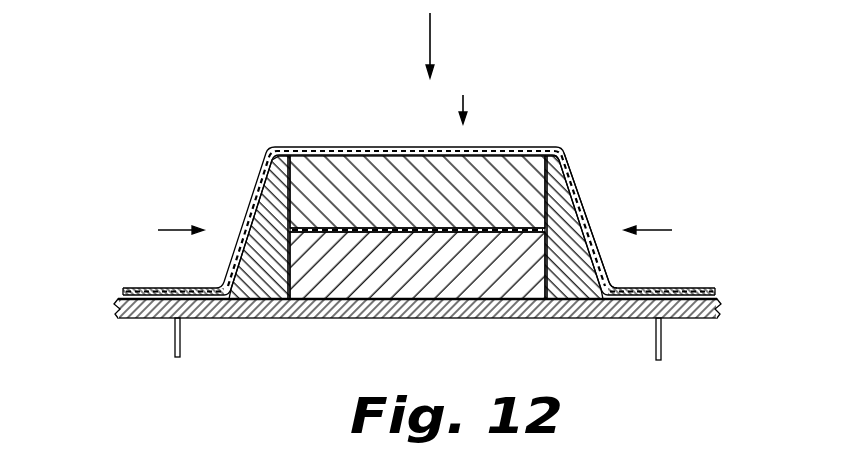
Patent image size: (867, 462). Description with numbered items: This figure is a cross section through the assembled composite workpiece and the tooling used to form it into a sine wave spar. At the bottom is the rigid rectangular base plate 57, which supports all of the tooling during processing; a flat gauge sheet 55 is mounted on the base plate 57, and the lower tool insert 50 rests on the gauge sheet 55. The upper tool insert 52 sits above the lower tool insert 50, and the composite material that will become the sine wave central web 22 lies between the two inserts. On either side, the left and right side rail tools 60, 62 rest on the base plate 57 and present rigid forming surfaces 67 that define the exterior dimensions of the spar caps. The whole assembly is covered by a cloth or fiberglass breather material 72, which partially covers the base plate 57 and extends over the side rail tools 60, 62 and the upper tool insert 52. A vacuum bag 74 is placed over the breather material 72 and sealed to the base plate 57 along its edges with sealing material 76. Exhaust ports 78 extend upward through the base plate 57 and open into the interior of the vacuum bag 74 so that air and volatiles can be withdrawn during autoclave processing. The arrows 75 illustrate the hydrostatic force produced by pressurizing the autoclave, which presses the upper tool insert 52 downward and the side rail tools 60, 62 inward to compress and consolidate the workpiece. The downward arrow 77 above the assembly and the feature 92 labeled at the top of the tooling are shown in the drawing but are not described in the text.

The sine wave central web 22 is at (408, 221).
The lower tool insert 50 is at (365, 272).
The upper tool insert 52 is at (517, 172).
The gauge sheet 55 is at (442, 300).
The base plate 57 is at (137, 315).
The left side rail tool 60 is at (253, 280).
The right side rail tool 62 is at (568, 250).
The forming surfaces 67 is at (290, 301).
The breather material 72 is at (568, 186).
The vacuum bag 74 is at (482, 149).
The arrows 75 is at (463, 95).
The sealing material 76 is at (123, 297).
The applied load direction 77 is at (430, 38).
The exhaust ports 78 is at (175, 337).
The interface layer 92 is at (388, 178).